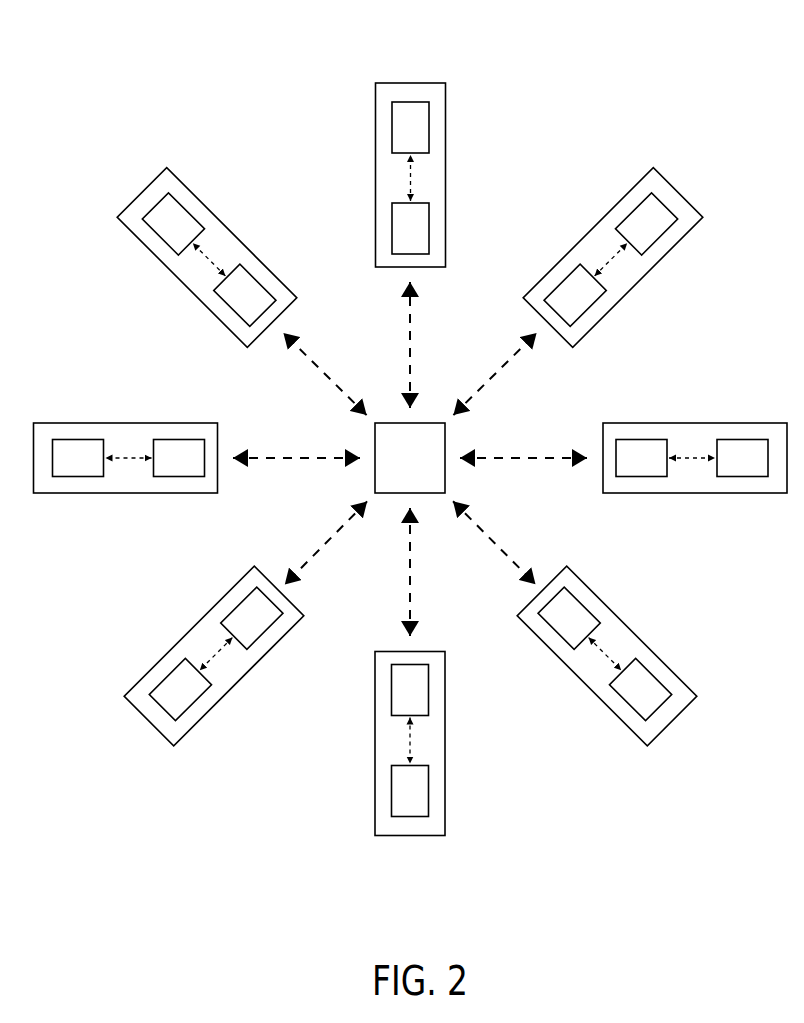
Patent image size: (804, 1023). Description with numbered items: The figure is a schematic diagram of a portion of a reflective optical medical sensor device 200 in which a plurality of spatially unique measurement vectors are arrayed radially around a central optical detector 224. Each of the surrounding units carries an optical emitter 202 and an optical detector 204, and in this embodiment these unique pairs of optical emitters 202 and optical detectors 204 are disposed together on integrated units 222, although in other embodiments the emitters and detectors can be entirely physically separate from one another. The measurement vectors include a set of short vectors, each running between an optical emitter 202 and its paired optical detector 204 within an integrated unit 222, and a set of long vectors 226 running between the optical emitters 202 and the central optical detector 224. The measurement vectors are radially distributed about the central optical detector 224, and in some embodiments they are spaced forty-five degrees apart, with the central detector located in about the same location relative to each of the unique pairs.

The reflective optical medical sensor device 200 is at (553, 100).
The optical emitter 202 is at (410, 228).
The optical detector 204 is at (410, 127).
The integrated unit 222 is at (390, 137).
The central optical detector 224 is at (393, 470).
The long vector 226 is at (410, 345).